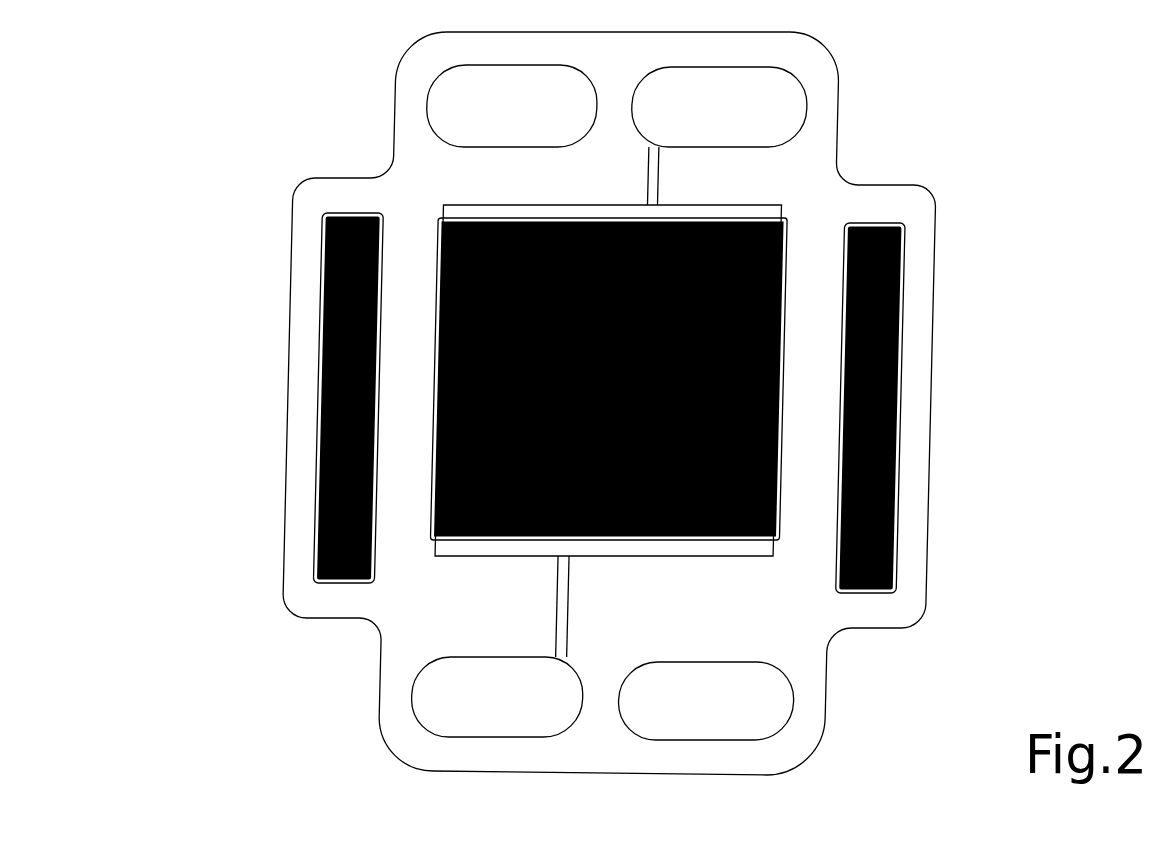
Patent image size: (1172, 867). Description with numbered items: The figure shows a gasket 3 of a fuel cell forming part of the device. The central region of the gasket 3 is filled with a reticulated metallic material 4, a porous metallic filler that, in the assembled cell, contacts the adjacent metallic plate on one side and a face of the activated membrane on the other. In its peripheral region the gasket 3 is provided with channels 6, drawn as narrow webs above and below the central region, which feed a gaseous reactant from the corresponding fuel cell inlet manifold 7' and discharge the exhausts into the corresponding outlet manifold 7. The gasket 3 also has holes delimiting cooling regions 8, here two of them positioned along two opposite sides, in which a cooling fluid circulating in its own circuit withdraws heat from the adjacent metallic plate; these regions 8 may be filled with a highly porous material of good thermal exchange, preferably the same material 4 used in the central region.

The gasket 3 is at (490, 172).
The reticulated metallic material 4 is at (783, 360).
The channels 6 is at (655, 167).
The outlet manifold 7 is at (428, 716).
The inlet manifold 7' is at (825, 92).
The cooling region 8 is at (330, 348).